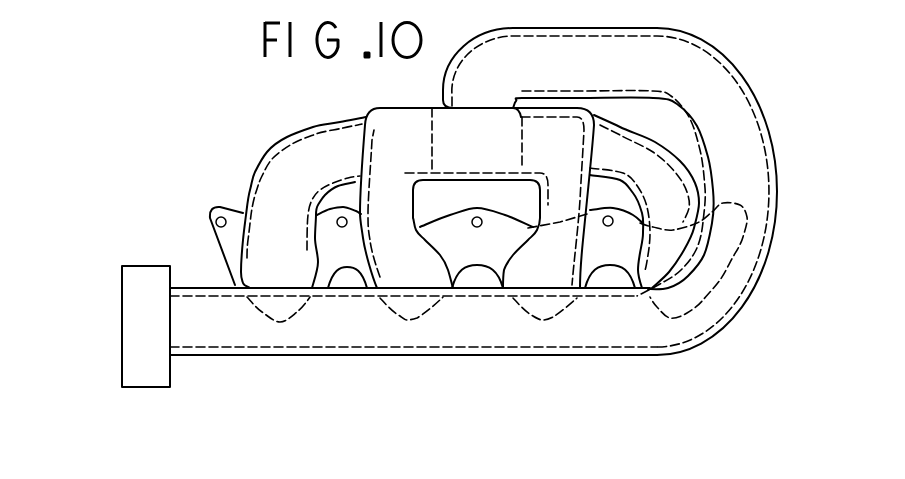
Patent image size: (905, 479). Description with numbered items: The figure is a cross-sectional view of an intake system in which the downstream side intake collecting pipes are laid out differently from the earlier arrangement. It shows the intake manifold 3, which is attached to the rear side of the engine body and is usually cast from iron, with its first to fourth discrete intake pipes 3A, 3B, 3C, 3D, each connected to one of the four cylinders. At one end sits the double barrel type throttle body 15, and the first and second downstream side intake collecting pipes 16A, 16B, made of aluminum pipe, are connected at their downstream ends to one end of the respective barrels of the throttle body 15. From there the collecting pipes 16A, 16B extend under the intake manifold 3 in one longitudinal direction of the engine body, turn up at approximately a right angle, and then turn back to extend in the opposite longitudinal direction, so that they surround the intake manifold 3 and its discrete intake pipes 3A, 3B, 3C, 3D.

The intake manifold 3 is at (237, 128).
The first discrete intake pipe 3A is at (243, 205).
The second discrete intake pipe 3B is at (347, 188).
The third discrete intake pipe 3C is at (590, 243).
The fourth discrete intake pipe 3D is at (705, 203).
The double barrel type throttle body 15 is at (152, 388).
The second downstream side intake collecting pipe 16B is at (407, 357).
The first downstream side intake collecting pipe 16A is at (413, 367).